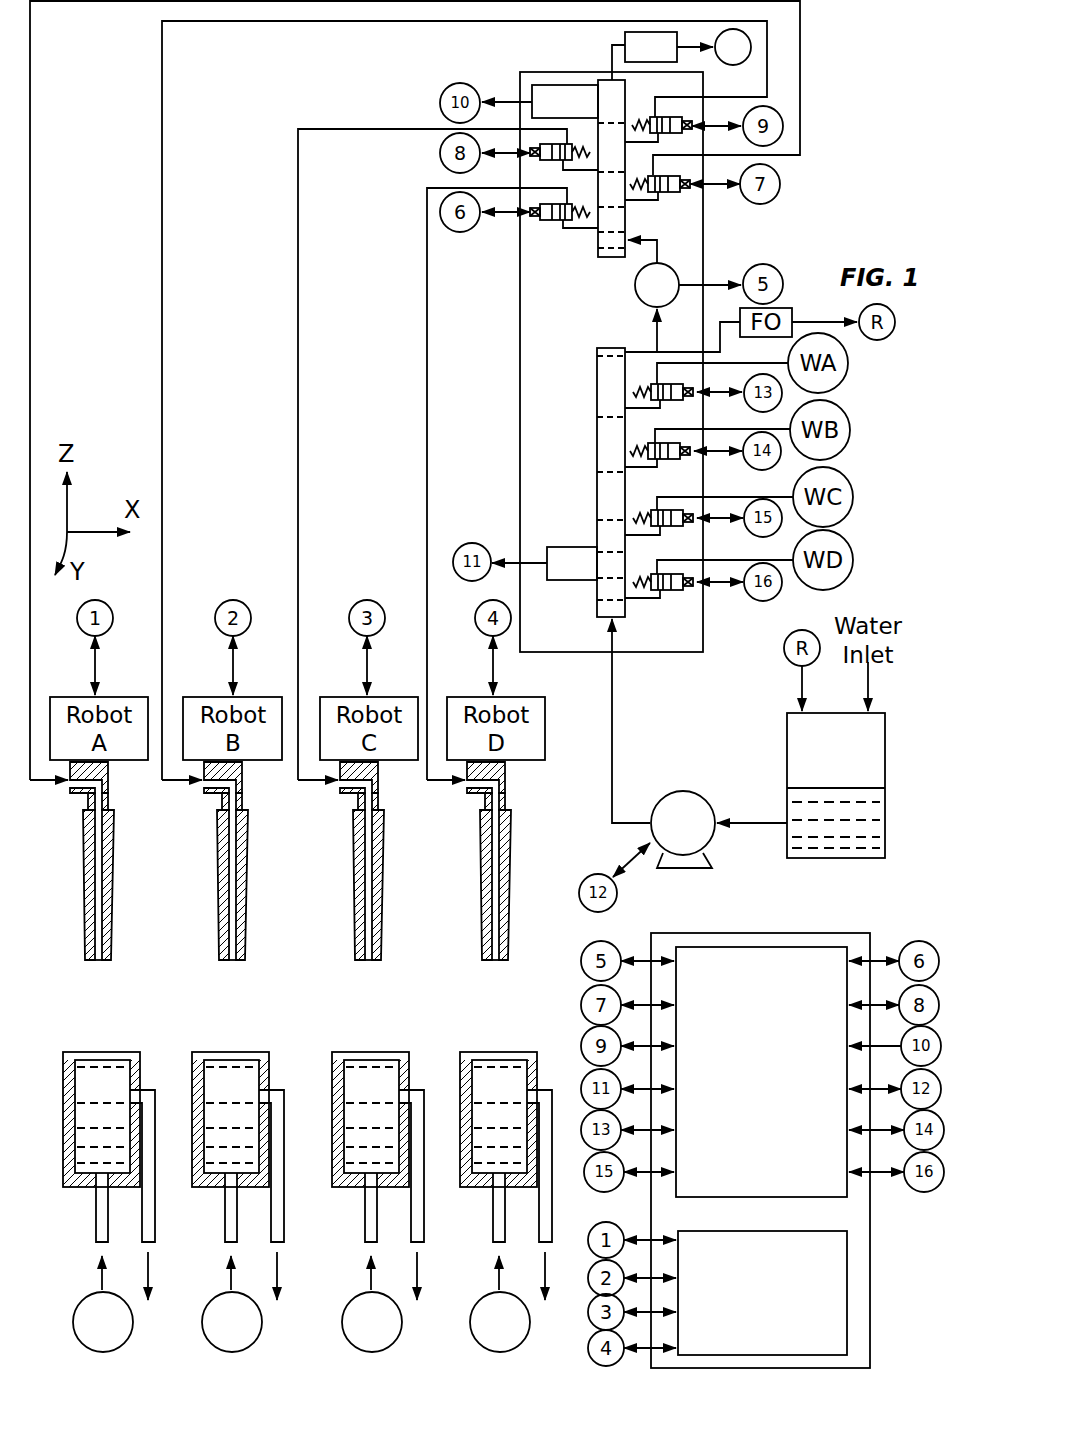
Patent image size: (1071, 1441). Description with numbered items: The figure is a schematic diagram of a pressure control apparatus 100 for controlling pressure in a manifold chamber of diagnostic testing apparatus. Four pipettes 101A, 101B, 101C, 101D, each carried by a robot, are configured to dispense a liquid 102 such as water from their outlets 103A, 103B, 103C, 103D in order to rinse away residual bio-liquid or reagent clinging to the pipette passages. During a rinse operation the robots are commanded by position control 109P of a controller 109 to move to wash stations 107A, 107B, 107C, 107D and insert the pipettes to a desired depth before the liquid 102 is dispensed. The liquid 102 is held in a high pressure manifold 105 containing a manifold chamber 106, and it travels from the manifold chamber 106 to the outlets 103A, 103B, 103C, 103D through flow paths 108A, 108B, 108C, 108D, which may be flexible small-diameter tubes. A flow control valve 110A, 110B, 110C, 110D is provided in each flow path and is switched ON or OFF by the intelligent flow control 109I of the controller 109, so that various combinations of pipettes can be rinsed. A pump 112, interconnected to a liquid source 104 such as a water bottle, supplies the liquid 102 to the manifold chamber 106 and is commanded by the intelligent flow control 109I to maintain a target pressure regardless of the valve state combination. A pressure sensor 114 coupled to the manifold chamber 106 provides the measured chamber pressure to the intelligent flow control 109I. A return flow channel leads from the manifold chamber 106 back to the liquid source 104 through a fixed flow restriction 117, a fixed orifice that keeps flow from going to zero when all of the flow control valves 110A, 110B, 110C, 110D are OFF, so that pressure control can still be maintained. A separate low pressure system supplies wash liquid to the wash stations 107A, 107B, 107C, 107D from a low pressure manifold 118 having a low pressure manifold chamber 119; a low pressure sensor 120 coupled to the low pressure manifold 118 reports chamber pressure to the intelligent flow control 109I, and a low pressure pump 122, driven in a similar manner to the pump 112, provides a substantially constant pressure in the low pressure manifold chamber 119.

The pressure control apparatus 100 is at (840, 205).
The pipette 101A is at (84, 885).
The pipette 101B is at (218, 887).
The pipette 101C is at (354, 886).
The pipette 101D is at (481, 886).
The liquid 102 is at (868, 822).
The outlet 103A is at (98, 962).
The outlet 103B is at (232, 962).
The outlet 103C is at (368, 962).
The outlet 103D is at (495, 962).
The liquid source 104 is at (787, 752).
The manifold 105 is at (592, 266).
The manifold chamber 106 is at (612, 238).
The wash station 107A is at (107, 1052).
The wash station 107B is at (236, 1052).
The wash station 107C is at (376, 1052).
The wash station 107D is at (504, 1052).
The flow path 108A is at (427, 323).
The flow path 108B is at (30, 343).
The flow path 108C is at (297, 247).
The flow path 108D is at (162, 402).
The controller 109 is at (810, 931).
The intelligent flow control 109I is at (762, 946).
The position control 109P is at (847, 1274).
The flow control valve 110A is at (547, 230).
The flow control valve 110B is at (674, 196).
The flow control valve 110C is at (540, 163).
The flow control valve 110D is at (662, 116).
The pump 112 is at (636, 287).
The pressure sensor 114 is at (538, 84).
The fixed flow restriction 117 is at (625, 35).
The low pressure manifold 118 is at (594, 443).
The low pressure manifold chamber 119 is at (610, 378).
The low pressure sensor 120 is at (565, 547).
The low pressure pump 122 is at (688, 791).